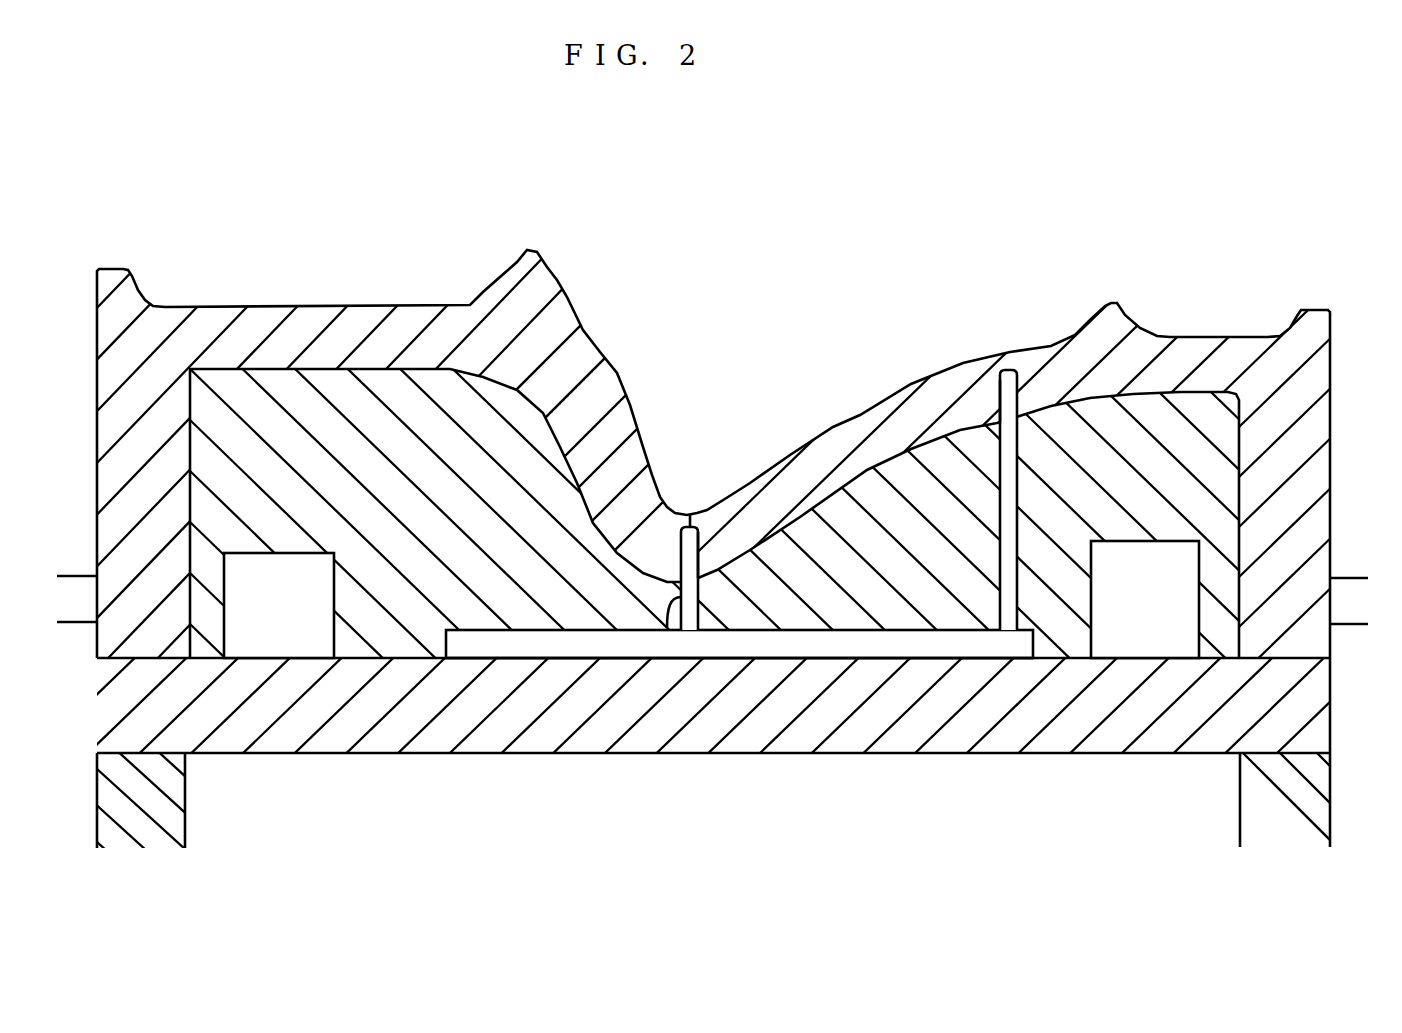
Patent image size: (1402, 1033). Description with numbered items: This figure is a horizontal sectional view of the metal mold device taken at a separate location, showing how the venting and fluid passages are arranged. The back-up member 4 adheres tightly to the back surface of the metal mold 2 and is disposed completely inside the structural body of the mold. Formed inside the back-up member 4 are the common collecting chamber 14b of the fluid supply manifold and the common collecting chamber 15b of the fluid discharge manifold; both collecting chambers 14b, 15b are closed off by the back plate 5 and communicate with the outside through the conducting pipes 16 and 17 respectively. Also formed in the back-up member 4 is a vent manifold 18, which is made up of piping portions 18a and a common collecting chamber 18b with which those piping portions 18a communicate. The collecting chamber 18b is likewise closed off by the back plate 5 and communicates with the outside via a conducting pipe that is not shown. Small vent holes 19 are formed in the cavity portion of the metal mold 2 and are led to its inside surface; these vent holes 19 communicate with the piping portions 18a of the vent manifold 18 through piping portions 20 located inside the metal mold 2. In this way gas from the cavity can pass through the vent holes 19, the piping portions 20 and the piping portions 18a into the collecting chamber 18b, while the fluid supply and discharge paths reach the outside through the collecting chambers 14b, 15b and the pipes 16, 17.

The metal mold 2 is at (405, 325).
The back-up member 4 is at (333, 413).
The back plate 5 is at (1098, 712).
The common collecting chamber 14b is at (294, 638).
The common collecting chamber 15b is at (1160, 630).
The conducting pipe 16 is at (73, 573).
The conducting pipe 17 is at (1345, 575).
The vent manifold 18 is at (620, 668).
The piping portions 18a is at (667, 636).
The common collecting chamber 18b is at (792, 648).
The vent holes 19 is at (688, 512).
The piping portions 20 is at (703, 565).